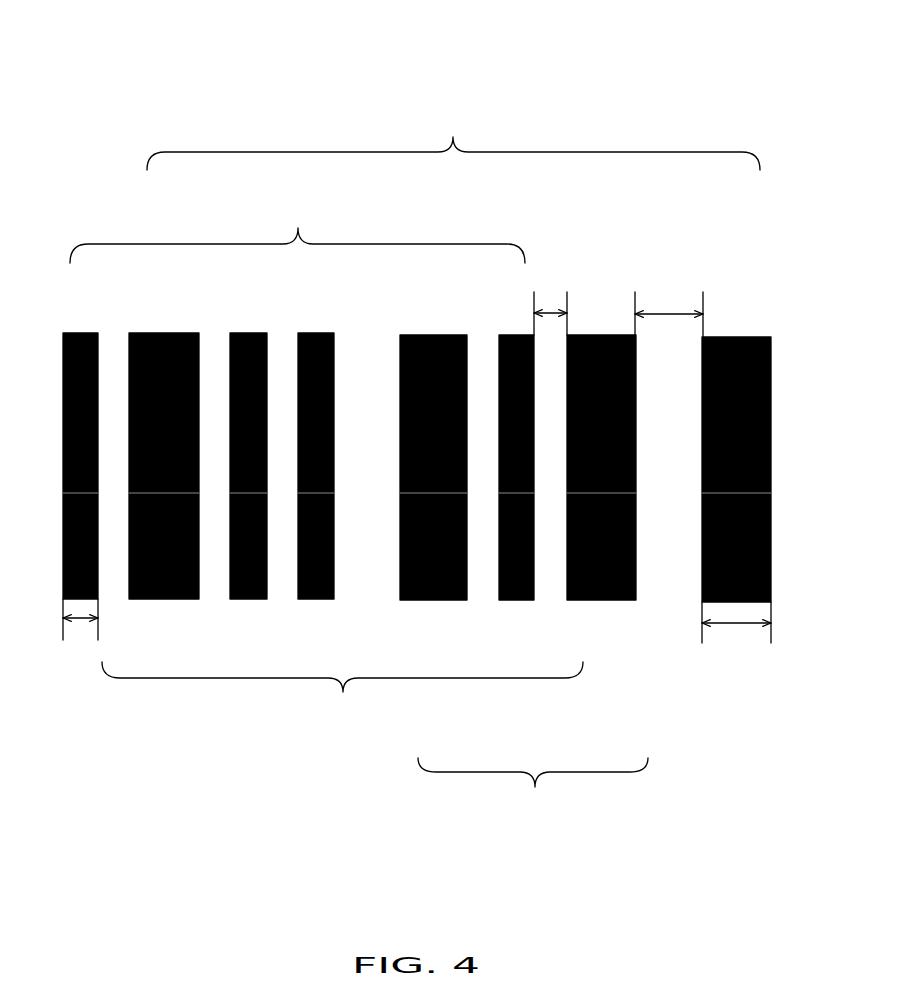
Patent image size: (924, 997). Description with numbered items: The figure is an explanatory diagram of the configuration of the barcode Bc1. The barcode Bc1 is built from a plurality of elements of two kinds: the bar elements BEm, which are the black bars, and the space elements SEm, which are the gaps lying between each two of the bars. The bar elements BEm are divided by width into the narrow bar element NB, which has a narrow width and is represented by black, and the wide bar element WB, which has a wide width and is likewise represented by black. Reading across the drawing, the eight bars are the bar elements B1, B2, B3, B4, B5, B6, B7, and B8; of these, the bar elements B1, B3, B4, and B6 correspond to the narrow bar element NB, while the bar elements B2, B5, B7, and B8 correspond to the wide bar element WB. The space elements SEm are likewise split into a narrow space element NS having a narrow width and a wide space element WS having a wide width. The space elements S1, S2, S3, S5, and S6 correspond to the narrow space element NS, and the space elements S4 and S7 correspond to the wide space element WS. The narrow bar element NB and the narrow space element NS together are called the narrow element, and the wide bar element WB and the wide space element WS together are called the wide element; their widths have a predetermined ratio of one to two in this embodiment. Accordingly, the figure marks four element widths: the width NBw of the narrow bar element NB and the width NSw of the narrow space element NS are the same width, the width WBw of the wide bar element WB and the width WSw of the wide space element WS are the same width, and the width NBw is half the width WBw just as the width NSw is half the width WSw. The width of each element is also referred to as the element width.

The barcode Bc1 is at (112, 82).
The bar element BEm is at (312, 193).
The wide bar element WB is at (453, 138).
The narrow bar element NB is at (297, 230).
The bar element B1 is at (80, 333).
The bar element B2 is at (163, 333).
The bar element B3 is at (247, 333).
The bar element B4 is at (313, 333).
The bar element B5 is at (428, 335).
The bar element B6 is at (508, 335).
The bar element B7 is at (602, 335).
The bar element B8 is at (732, 337).
The width of the narrow space element NSw is at (552, 312).
The width of the wide space element WSw is at (668, 312).
The width of the narrow bar element NBw is at (78, 620).
The width of the wide bar element WBw is at (735, 625).
The space element S1 is at (113, 602).
The space element S2 is at (213, 602).
The space element S3 is at (280, 602).
The space element S4 is at (375, 603).
The space element S5 is at (482, 603).
The space element S6 is at (547, 603).
The space element S7 is at (667, 603).
The narrow space element NS is at (342, 691).
The wide space element WS is at (533, 785).
The space element SEm is at (345, 722).